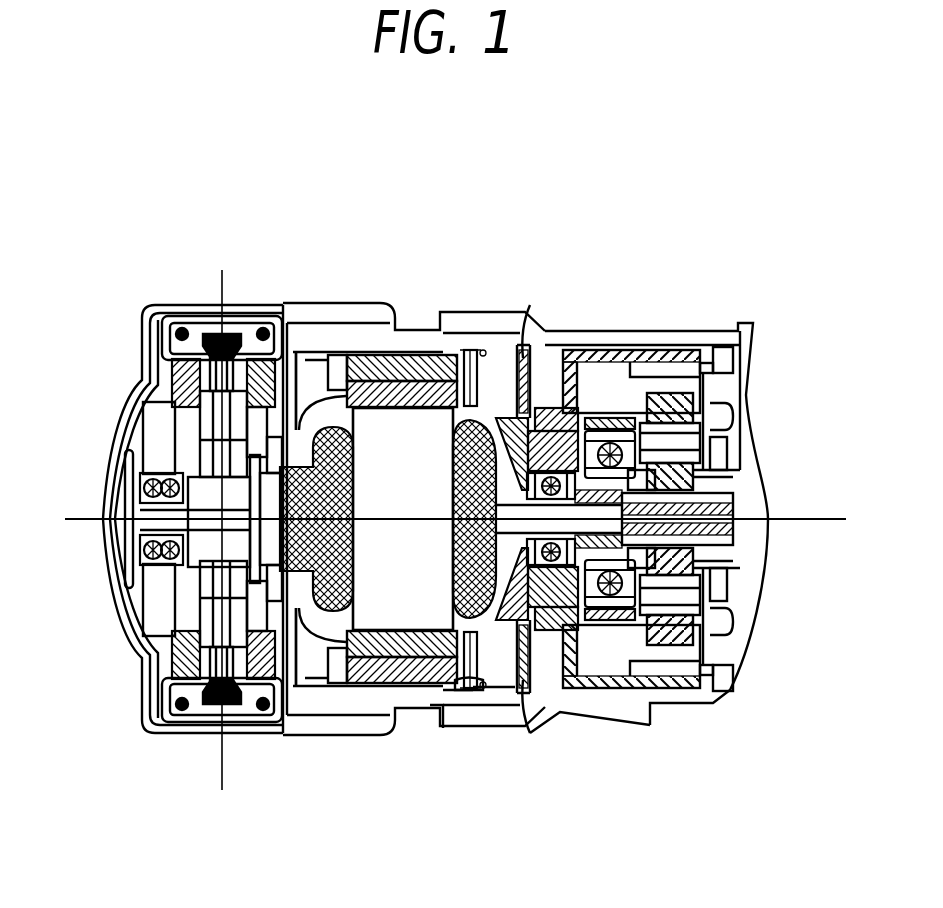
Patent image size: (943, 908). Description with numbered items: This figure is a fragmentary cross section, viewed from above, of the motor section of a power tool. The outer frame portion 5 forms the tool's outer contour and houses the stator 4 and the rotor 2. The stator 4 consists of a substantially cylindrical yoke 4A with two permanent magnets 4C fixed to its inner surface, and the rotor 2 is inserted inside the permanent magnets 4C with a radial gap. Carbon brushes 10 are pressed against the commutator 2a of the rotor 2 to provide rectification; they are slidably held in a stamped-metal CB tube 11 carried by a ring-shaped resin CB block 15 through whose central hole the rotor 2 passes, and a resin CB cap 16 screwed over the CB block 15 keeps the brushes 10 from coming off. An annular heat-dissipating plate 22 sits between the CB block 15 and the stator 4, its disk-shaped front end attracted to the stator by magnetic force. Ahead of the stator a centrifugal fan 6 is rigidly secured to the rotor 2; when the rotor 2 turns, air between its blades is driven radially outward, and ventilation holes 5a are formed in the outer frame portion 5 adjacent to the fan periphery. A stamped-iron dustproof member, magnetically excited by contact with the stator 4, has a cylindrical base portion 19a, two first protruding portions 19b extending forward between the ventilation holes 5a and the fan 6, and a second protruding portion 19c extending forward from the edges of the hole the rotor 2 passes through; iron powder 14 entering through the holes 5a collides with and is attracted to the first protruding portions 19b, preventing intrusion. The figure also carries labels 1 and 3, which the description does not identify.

The output shaft 1 is at (738, 502).
The rotor 2 is at (378, 640).
The commutator 2a is at (197, 553).
The bearing 3 is at (150, 488).
The stator 4 is at (423, 328).
The yoke 4A is at (361, 355).
The permanent magnets 4C is at (444, 357).
The outer frame portion 5 is at (745, 323).
The ventilation holes 5a is at (542, 350).
The centrifugal fan 6 is at (545, 720).
The carbon brushes 10 is at (228, 700).
The CB tube 11 is at (200, 632).
The iron powder 14 is at (571, 252).
The CB block 15 is at (165, 395).
The CB cap 16 is at (183, 318).
The base portion 19a is at (450, 726).
The first protruding portions 19b is at (518, 345).
The second protruding portion 19c is at (461, 700).
The heat-dissipating plate 22 is at (311, 385).